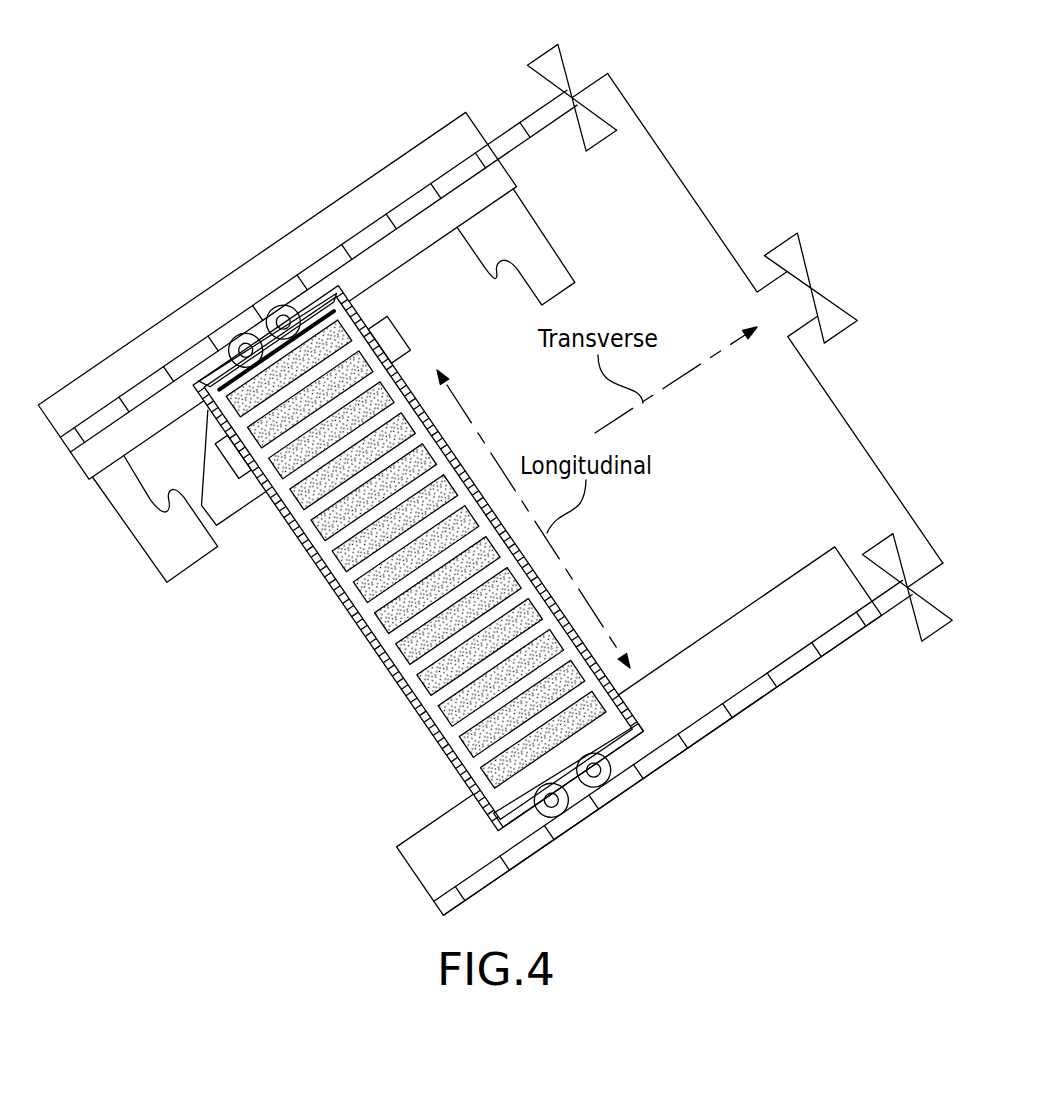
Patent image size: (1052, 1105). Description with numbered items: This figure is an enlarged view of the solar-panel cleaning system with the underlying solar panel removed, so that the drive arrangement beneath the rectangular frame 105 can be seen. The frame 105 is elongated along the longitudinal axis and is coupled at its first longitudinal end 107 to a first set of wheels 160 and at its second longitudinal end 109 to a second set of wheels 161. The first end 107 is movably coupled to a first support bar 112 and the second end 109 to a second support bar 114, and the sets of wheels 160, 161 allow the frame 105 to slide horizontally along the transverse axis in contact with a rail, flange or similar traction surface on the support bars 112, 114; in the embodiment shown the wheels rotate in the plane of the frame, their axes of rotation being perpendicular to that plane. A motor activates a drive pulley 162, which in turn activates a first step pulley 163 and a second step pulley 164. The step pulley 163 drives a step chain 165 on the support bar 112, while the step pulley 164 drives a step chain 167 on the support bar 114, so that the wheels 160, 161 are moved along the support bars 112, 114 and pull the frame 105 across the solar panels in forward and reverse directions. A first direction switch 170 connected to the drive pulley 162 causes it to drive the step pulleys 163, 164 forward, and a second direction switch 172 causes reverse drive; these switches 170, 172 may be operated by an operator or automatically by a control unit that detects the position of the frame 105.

The frame 105 is at (356, 626).
The first longitudinal end 107 is at (205, 365).
The second longitudinal end 109 is at (521, 817).
The first support bar 112 is at (335, 202).
The second support bar 114 is at (420, 828).
The first set of wheels 160 is at (255, 315).
The second set of wheels 161 is at (605, 797).
The drive pulley 162 is at (829, 300).
The first step pulley 163 is at (567, 67).
The second step pulley 164 is at (915, 623).
The step chain 165 is at (513, 143).
The step chain 167 is at (745, 708).
The first direction switch 170 is at (246, 510).
The second direction switch 172 is at (425, 347).